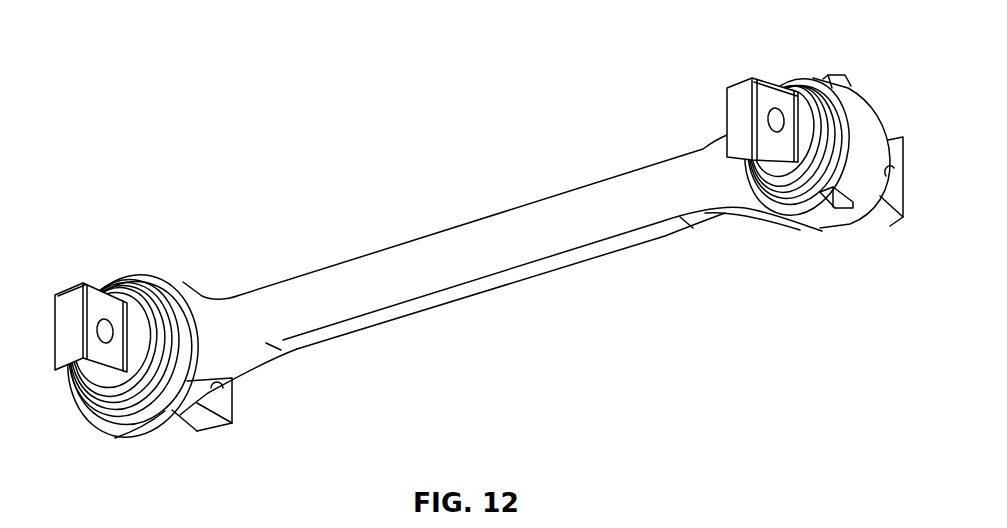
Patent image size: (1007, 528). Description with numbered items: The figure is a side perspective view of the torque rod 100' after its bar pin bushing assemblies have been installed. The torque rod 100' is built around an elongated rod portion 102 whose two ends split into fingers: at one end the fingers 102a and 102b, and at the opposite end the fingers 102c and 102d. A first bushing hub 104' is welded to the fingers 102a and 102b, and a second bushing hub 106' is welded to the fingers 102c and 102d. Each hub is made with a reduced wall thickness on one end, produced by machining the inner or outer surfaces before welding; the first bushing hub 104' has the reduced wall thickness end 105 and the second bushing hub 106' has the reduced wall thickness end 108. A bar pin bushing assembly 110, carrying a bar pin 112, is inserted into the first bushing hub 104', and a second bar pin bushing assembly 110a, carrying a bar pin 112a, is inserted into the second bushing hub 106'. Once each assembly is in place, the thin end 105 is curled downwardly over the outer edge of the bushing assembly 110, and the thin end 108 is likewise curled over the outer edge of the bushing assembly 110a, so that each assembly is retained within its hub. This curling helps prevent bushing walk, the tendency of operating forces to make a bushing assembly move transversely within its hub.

The torque rod 100' is at (154, 49).
The rod portion 102 is at (508, 228).
The finger 102a is at (846, 82).
The finger 102b is at (824, 222).
The finger 102c is at (178, 288).
The finger 102d is at (150, 436).
The first bushing hub 104' is at (839, 148).
The reduced wall thickness end 105 is at (806, 90).
The second bushing hub 106' is at (158, 348).
The reduced wall thickness end 108 is at (152, 283).
The bar pin bushing assembly 110 is at (740, 242).
The bar pin bushing assembly 110a is at (75, 432).
The bar pin 112 is at (772, 82).
The bar pin 112a is at (95, 288).